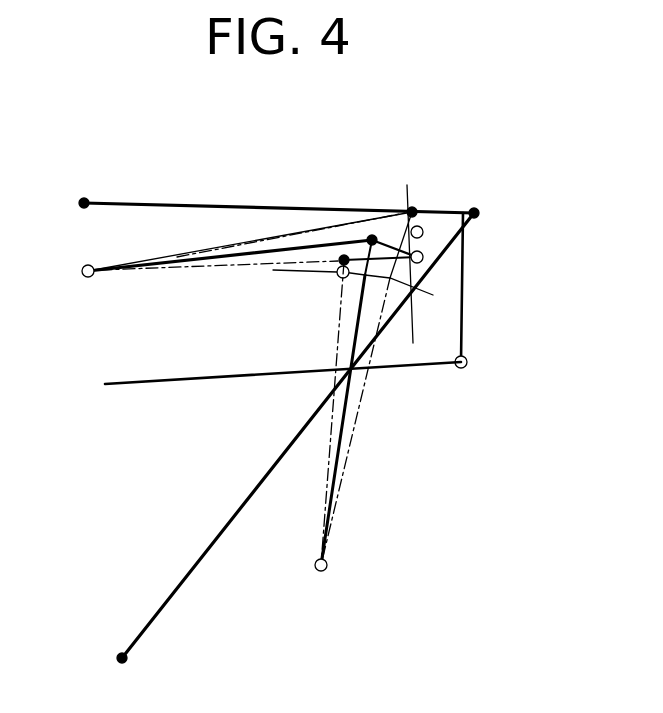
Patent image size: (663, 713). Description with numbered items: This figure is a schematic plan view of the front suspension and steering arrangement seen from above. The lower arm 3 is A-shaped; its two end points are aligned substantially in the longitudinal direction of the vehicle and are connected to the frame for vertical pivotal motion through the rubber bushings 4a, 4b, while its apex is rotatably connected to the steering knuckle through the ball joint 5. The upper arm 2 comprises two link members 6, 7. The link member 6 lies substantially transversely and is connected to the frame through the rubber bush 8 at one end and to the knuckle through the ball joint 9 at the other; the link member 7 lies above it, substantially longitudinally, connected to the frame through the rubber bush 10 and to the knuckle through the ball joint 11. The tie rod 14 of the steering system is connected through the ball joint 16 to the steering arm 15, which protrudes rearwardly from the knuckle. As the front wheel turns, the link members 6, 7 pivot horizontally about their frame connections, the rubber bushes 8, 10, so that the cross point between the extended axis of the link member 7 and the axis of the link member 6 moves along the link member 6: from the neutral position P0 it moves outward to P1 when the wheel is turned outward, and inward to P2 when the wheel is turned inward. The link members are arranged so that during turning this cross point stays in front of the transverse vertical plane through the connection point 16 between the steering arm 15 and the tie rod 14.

The upper arm 2 is at (323, 208).
The lower arm 3 is at (207, 552).
The rubber bushing 4a is at (84, 198).
The rubber bushing 4b is at (127, 660).
The ball joint 5 is at (479, 212).
The link member 6 is at (275, 247).
The link member 7 is at (340, 430).
The rubber bush 8 is at (82, 271).
The ball joint 9 is at (422, 227).
The rubber bush 10 is at (327, 565).
The ball joint 11 is at (343, 279).
The tie rod 14 is at (192, 383).
The steering arm 15 is at (463, 285).
The ball joint 16 is at (467, 366).
The cross point in neutral position P0 is at (372, 236).
The cross point in outward turn P1 is at (412, 207).
The cross point in inward turn P2 is at (340, 264).